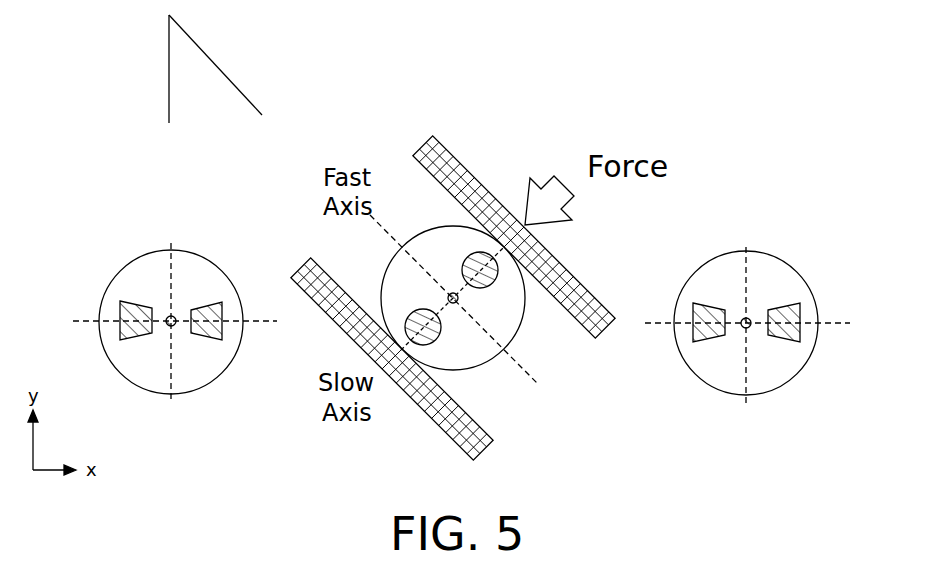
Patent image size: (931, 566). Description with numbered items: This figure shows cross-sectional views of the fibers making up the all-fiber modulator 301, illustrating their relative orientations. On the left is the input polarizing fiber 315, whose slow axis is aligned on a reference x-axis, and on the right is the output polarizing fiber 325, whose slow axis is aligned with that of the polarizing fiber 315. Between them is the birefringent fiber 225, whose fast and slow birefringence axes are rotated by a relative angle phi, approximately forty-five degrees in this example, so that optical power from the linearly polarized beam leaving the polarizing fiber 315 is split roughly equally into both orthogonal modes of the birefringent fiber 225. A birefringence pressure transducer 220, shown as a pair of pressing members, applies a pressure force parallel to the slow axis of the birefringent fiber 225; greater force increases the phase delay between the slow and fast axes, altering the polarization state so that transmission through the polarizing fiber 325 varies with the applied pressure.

The modulator 301 is at (94, 92).
The input polarizing fiber 315 is at (165, 251).
The birefringence pressure transducer 220 is at (463, 187).
The birefringent fiber 225 is at (390, 263).
The output polarizing fiber 325 is at (737, 251).